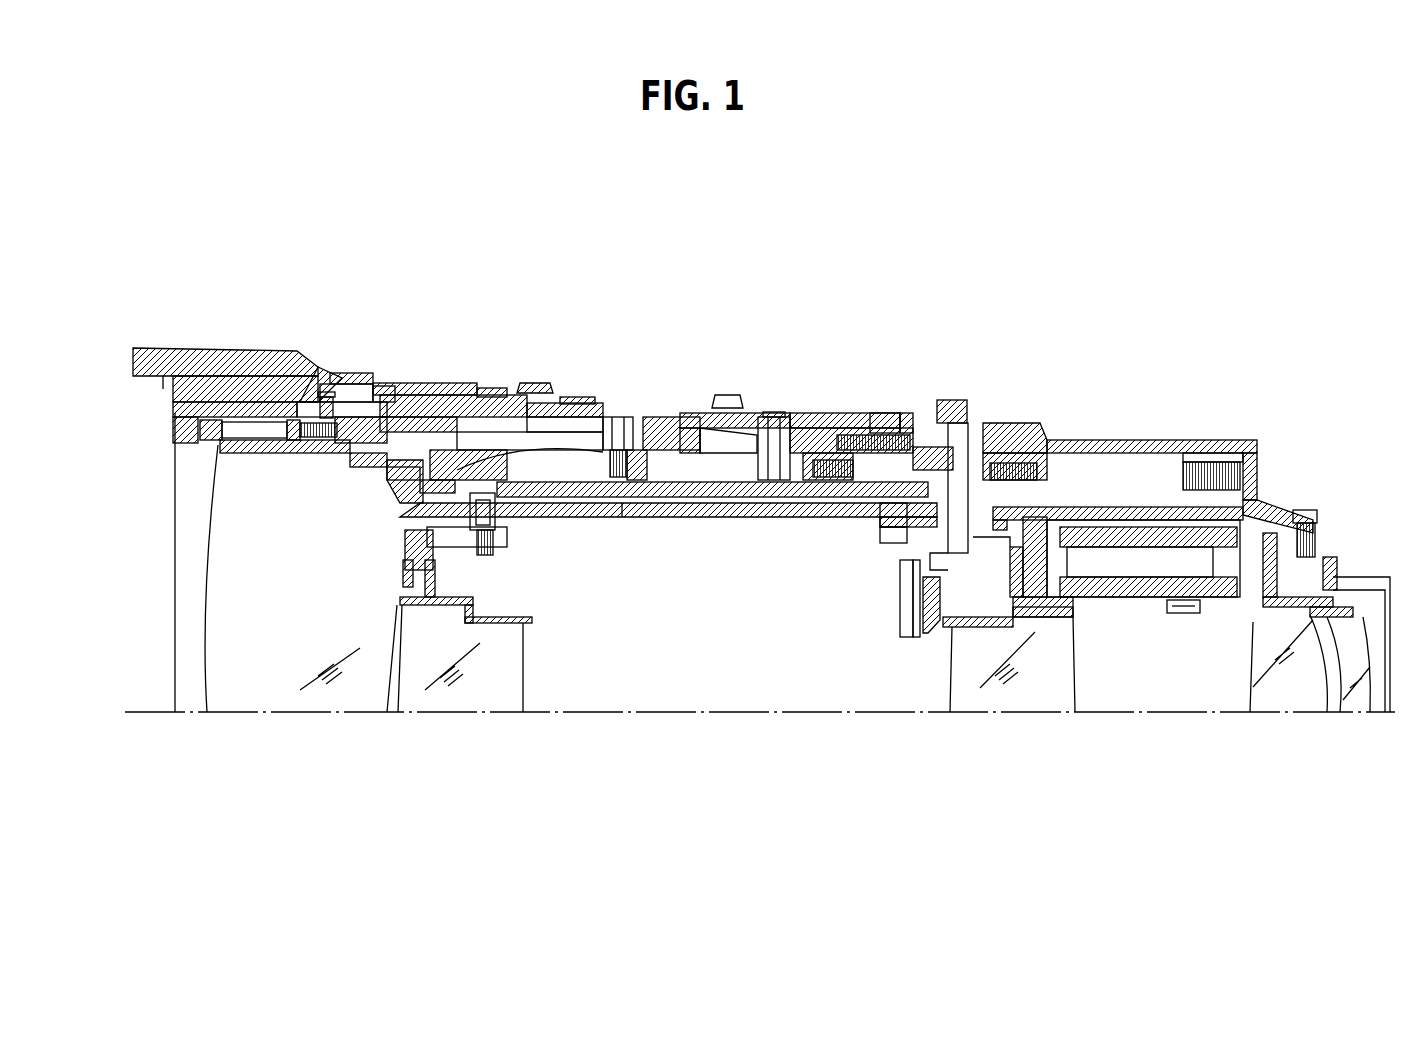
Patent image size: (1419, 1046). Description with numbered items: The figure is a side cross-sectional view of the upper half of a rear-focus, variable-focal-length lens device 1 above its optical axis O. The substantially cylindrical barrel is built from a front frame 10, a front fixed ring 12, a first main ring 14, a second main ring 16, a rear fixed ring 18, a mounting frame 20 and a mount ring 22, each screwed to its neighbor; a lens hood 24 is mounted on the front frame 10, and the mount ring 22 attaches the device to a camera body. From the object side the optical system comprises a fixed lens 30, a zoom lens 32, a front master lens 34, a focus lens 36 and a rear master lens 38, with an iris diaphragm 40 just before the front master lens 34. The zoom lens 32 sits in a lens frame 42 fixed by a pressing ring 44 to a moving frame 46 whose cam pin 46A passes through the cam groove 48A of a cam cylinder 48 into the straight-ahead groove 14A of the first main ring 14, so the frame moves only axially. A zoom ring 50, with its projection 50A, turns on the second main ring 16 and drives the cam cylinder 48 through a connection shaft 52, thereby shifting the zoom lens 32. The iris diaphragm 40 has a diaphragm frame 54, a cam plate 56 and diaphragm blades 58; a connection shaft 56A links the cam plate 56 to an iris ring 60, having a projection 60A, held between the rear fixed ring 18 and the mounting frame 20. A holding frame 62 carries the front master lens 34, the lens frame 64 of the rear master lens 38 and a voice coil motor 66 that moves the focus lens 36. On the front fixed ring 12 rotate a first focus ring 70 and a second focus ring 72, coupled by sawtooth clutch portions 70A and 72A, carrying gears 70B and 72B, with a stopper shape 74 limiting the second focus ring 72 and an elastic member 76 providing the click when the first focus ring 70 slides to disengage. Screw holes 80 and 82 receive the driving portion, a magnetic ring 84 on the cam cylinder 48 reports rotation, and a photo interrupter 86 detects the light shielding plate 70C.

The lens device 1 is at (939, 231).
The optical axis O is at (152, 714).
The front frame 10 is at (328, 376).
The front fixed ring 12 is at (597, 520).
The first main ring 14 is at (687, 515).
The straight-ahead groove 14A is at (628, 520).
The second main ring 16 is at (683, 413).
The rear fixed ring 18 is at (878, 405).
The mounting frame 20 is at (1097, 440).
The mount ring 22 is at (1295, 510).
The lens hood 24 is at (173, 350).
The fixed lens 30 is at (270, 693).
The zoom lens 32 is at (462, 693).
The front master lens 34 is at (1015, 690).
The focus lens 36 is at (1275, 688).
The rear master lens 38 is at (1358, 697).
The iris diaphragm 40 is at (891, 632).
The lens frame 42 is at (480, 603).
The pressing ring 44 is at (405, 535).
The moving frame 46 is at (500, 540).
The cam pin 46A is at (420, 505).
The cam cylinder 48 is at (742, 520).
The cam groove 48A is at (500, 520).
The zoom ring 50 is at (775, 413).
The zoom ring projection 50A is at (735, 395).
The connection shaft 52 is at (800, 417).
The diaphragm frame 54 is at (900, 600).
The cam plate 56 is at (930, 640).
The connection shaft 56A is at (970, 540).
The diaphragm blades 58 is at (912, 640).
The iris ring 60 is at (990, 423).
The iris ring projection 60A is at (952, 400).
The holding frame 62 is at (1112, 507).
The lens frame 64 is at (1330, 562).
The voice coil motor 66 is at (1178, 638).
The first focus ring 70 is at (446, 383).
The clutch portion 70A is at (505, 385).
The gear 70B is at (537, 383).
The light shielding plate 70C is at (373, 400).
The second focus ring 72 is at (565, 385).
The clutch portion 72A is at (468, 465).
The gear 72B is at (580, 398).
The stopper shape 74 is at (630, 417).
The elastic member 76 is at (485, 388).
The screw hole 80 is at (672, 417).
The screw hole 82 is at (908, 413).
The magnetic ring 84 is at (882, 527).
The photo interrupter 86 is at (345, 375).